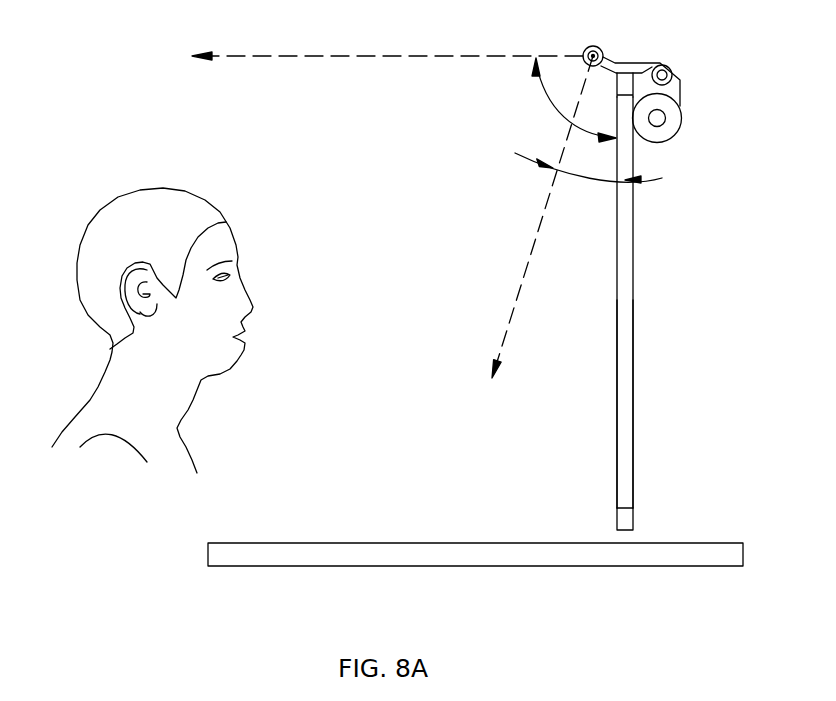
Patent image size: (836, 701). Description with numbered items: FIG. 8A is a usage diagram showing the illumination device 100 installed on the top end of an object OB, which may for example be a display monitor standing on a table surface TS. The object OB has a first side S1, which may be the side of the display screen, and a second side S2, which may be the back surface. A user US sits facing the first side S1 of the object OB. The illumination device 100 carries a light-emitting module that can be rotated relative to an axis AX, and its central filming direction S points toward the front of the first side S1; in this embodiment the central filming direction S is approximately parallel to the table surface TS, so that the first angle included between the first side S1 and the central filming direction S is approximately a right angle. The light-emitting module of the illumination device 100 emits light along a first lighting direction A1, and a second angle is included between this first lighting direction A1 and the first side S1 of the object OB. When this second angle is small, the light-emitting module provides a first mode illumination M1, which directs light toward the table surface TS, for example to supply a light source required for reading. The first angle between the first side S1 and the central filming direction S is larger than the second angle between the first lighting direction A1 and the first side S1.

The illumination device 100 is at (635, 72).
The axis AX is at (589, 47).
The central filming direction S is at (377, 58).
The first lighting direction A1 is at (542, 222).
The first mode illumination M1 is at (406, 310).
The object OB is at (626, 252).
The second side S2 is at (637, 430).
The first side S1 is at (615, 512).
The table surface TS is at (295, 553).
The user US is at (127, 208).